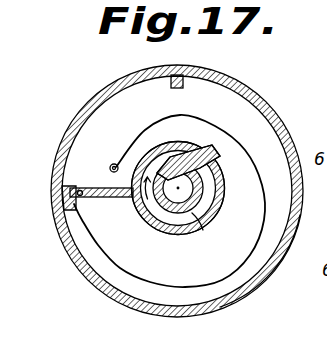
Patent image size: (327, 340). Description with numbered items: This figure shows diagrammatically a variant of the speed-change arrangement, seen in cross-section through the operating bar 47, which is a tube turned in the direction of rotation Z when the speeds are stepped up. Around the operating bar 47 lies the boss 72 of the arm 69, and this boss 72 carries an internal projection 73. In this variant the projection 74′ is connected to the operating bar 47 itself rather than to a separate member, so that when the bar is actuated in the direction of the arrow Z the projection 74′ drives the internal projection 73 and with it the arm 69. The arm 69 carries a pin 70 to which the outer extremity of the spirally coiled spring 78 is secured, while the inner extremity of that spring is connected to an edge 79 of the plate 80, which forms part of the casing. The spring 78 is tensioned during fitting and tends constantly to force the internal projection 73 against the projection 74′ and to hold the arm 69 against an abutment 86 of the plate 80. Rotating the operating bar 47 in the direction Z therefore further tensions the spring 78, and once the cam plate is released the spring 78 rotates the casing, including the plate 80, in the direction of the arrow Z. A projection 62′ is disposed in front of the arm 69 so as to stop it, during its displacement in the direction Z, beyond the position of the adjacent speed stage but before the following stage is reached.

The projection 62′ is at (187, 74).
The plate 80 is at (270, 116).
The spirally coiled spring 78 is at (263, 217).
The edge 79 is at (113, 163).
The abutment 86 is at (68, 207).
The pin 70 is at (91, 198).
The arm 69 is at (73, 188).
The operating bar 47 is at (187, 236).
The boss 72 is at (168, 236).
The projection 74′ is at (165, 148).
The internal projection 73 is at (195, 147).
The direction of rotation Z is at (142, 213).